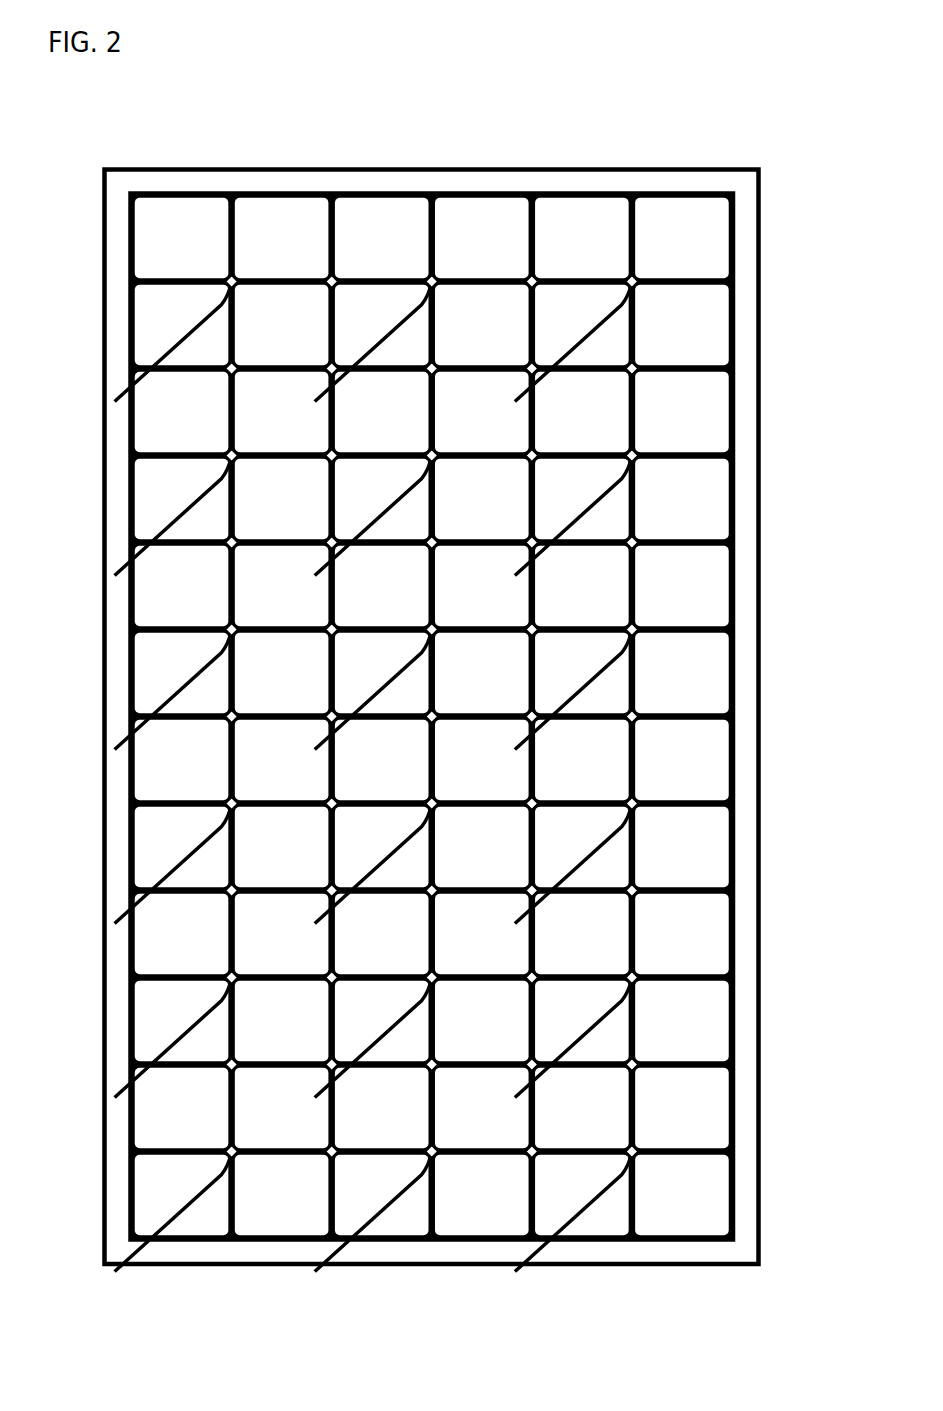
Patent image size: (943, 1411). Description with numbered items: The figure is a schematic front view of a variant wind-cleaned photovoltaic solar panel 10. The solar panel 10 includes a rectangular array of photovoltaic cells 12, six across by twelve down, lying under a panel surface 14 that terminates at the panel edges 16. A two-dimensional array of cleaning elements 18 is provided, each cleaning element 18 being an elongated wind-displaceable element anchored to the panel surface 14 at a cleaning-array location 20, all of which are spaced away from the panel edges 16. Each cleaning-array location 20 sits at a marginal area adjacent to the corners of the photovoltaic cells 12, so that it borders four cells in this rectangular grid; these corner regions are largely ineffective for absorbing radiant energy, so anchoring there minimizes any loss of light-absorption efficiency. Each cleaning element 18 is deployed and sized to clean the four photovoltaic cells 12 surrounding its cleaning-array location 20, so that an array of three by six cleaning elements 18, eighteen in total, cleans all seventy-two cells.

The solar panel 10 is at (697, 109).
The photovoltaic cells 12 is at (247, 197).
The panel surface 14 is at (116, 309).
The panel edges 16 is at (548, 167).
The cleaning elements 18 is at (412, 310).
The cleaning-array locations 20 is at (231, 276).